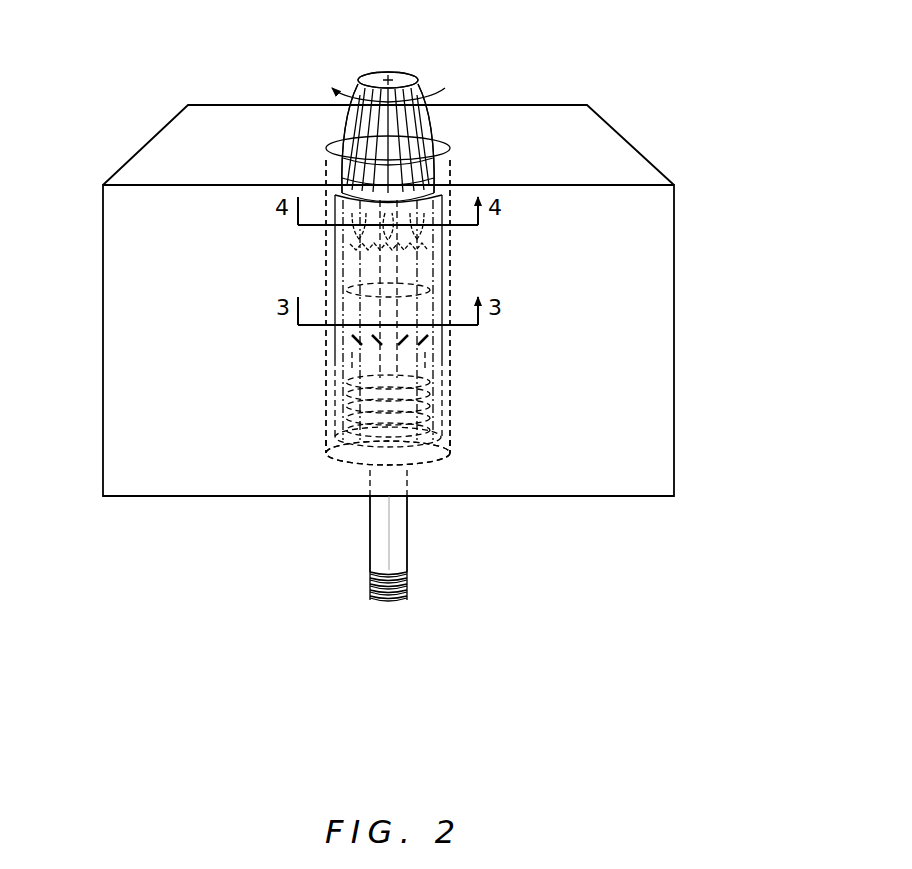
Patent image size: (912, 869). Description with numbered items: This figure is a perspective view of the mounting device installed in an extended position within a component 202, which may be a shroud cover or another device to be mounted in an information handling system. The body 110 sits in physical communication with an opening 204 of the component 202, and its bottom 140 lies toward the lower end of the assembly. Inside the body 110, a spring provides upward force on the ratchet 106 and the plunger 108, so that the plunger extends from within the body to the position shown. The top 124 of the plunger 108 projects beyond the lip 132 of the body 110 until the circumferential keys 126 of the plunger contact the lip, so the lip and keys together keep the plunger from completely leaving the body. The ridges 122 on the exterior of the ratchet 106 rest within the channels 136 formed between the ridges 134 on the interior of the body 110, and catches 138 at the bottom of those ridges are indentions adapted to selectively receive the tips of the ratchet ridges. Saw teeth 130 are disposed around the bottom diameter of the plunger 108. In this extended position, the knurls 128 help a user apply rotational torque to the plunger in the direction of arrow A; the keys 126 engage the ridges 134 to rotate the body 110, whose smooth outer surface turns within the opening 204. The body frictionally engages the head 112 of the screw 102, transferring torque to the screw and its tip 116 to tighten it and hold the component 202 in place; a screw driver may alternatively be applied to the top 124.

The screw 102 is at (410, 548).
The ratchet 106 is at (366, 296).
The plunger 108 is at (366, 72).
The body 110 is at (322, 352).
The head 112 is at (358, 460).
The tip 116 is at (372, 598).
The ridges 122 is at (395, 372).
The top 124 is at (408, 80).
The circumferential keys 126 is at (445, 160).
The circumferential knurls 128 is at (430, 130).
The saw teeth 130 is at (365, 245).
The lip 132 is at (330, 185).
The ridges 134 is at (430, 292).
The channels 136 is at (375, 340).
The catches 138 is at (430, 343).
The bottom 140 is at (338, 453).
The component 202 is at (636, 137).
The opening 204 is at (456, 450).
The arrow A is at (392, 83).